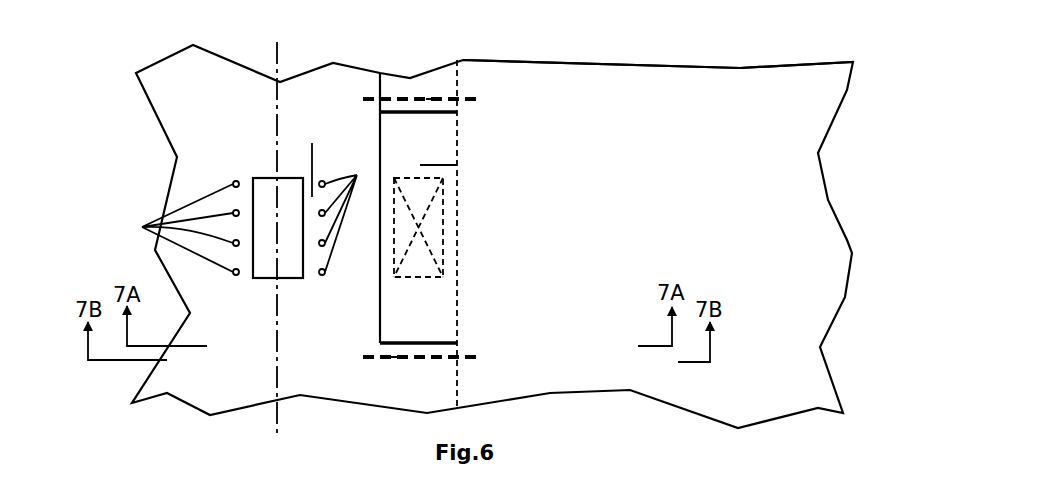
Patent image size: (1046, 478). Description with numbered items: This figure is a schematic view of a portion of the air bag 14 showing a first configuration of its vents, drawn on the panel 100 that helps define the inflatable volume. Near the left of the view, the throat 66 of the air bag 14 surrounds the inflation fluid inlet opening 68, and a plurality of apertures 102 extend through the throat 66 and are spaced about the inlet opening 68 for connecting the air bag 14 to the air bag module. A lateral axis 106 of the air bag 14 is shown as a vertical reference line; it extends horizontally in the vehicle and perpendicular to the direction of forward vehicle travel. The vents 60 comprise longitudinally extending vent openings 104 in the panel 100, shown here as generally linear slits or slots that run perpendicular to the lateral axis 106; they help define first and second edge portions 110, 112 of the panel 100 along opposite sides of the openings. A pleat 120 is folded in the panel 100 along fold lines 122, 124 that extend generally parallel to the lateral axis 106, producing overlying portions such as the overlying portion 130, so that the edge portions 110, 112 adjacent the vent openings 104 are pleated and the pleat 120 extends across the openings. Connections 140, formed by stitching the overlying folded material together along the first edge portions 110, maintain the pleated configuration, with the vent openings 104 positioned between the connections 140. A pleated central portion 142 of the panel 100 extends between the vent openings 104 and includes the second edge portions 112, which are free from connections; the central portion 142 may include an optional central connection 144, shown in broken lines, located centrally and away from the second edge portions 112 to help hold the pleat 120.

The air bag 14 is at (122, 90).
The vent 60 is at (432, 103).
The throat 66 is at (311, 159).
The inflation fluid inlet opening 68 is at (267, 192).
The panel 100 is at (603, 97).
The apertures 102 is at (238, 213).
The vent openings 104 is at (415, 110).
The lateral axis 106 is at (277, 62).
The first edge portions 110 is at (397, 108).
The second edge portions 112 is at (433, 115).
The pleat 120 is at (385, 317).
The fold line 122 is at (378, 278).
The fold line 124 is at (462, 157).
The overlying portion 130 is at (402, 143).
The connections 140 is at (477, 98).
The central portion 142 is at (420, 165).
The central connection 144 is at (448, 233).